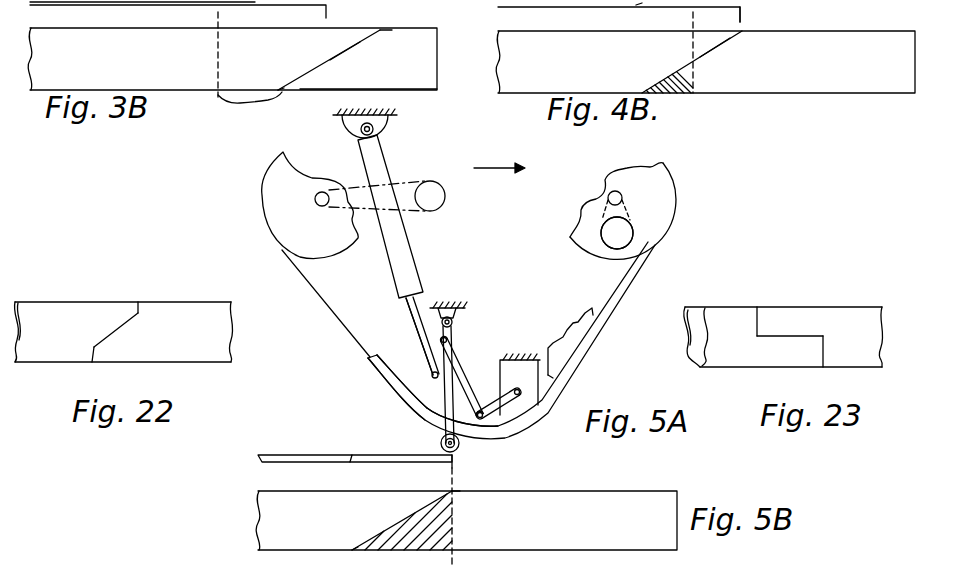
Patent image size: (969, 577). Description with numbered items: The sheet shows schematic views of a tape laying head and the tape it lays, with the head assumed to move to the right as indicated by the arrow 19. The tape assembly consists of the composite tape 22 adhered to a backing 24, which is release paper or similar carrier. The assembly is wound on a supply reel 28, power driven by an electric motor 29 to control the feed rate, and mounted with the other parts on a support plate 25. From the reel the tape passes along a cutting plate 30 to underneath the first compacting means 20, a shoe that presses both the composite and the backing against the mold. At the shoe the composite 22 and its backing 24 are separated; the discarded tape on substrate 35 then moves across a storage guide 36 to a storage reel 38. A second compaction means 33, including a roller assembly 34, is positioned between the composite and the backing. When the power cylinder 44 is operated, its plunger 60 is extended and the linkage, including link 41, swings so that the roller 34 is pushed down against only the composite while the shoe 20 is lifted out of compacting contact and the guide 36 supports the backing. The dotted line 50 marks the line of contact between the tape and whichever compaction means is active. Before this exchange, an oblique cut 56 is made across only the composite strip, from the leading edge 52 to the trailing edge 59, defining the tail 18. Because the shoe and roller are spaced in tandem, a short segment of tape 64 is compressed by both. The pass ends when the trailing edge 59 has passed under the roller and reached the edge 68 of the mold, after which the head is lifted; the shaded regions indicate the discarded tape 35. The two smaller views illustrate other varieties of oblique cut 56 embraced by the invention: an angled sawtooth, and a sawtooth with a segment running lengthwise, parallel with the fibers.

In FIG. 3B, the tail 18 is at (321, 60).
In FIG. 4B, the tail 18 is at (692, 62).
In FIG. 5A, the tail 18 is at (367, 455).
In FIG. 5B, the tail 18 is at (402, 520).
In FIG. 5A, the arrow 19 is at (497, 164).
In FIG. 5A, the first compacting means 20 is at (536, 355).
In FIG. 3B, the tape 22 is at (98, 62).
In FIG. 4B, the tape 22 is at (571, 72).
In FIG. 5A, the tape 22 is at (307, 455).
In FIG. 5B, the tape 22 is at (318, 531).
In FIG. 22, the tape 22 is at (75, 347).
In FIG. 23, the tape 22 is at (742, 358).
In FIG. 5A, the backing 24 is at (325, 302).
In FIG. 22, the backing 24 is at (28, 308).
In FIG. 23, the backing 24 is at (695, 313).
In FIG. 5A, the support plate 25 is at (397, 114).
In FIG. 5A, the supply reel 28 is at (660, 204).
In FIG. 5A, the electric motor 29 is at (604, 235).
In FIG. 5A, the cutting plate 30 is at (580, 333).
In FIG. 5A, the second compaction means 33 is at (424, 440).
In FIG. 5A, the roller assembly 34 is at (472, 445).
In FIG. 3B, the discarded tape on substrate 35 is at (369, 82).
In FIG. 4B, the discarded tape on substrate 35 is at (675, 95).
In FIG. 5A, the discarded tape on substrate 35 is at (382, 378).
In FIG. 5B, the discarded tape on substrate 35 is at (407, 535).
In FIG. 5A, the storage guide 36 is at (422, 398).
In FIG. 5A, the storage reel 38 is at (307, 232).
In FIG. 5A, the link 41 is at (466, 335).
In FIG. 5A, the power cylinder 44 is at (392, 163).
In FIG. 3B, the dotted line 50 is at (218, 52).
In FIG. 4B, the dotted line 50 is at (693, 70).
In FIG. 5B, the dotted line 50 is at (455, 525).
In FIG. 3B, the leading edge 52 is at (282, 92).
In FIG. 4B, the leading edge 52 is at (637, 5).
In FIG. 5A, the leading edge 52 is at (368, 357).
In FIG. 5B, the leading edge 52 is at (350, 552).
In FIG. 22, the leading edge 52 is at (93, 352).
In FIG. 23, the leading edge 52 is at (758, 312).
In FIG. 3B, the oblique cut 56 is at (348, 45).
In FIG. 4B, the oblique cut 56 is at (722, 43).
In FIG. 22, the oblique cut 56 is at (118, 330).
In FIG. 23, the oblique cut 56 is at (793, 334).
In FIG. 3B, the trailing edge 59 is at (380, 32).
In FIG. 5B, the trailing edge 59 is at (455, 494).
In FIG. 22, the trailing edge 59 is at (140, 312).
In FIG. 23, the trailing edge 59 is at (823, 360).
In FIG. 5A, the plunger 60 is at (444, 285).
In FIG. 3B, the short segment of tape 64 is at (273, 0).
In FIG. 4B, the edge of the mold 68 is at (742, 17).
In FIG. 5A, the edge of the mold 68 is at (455, 462).